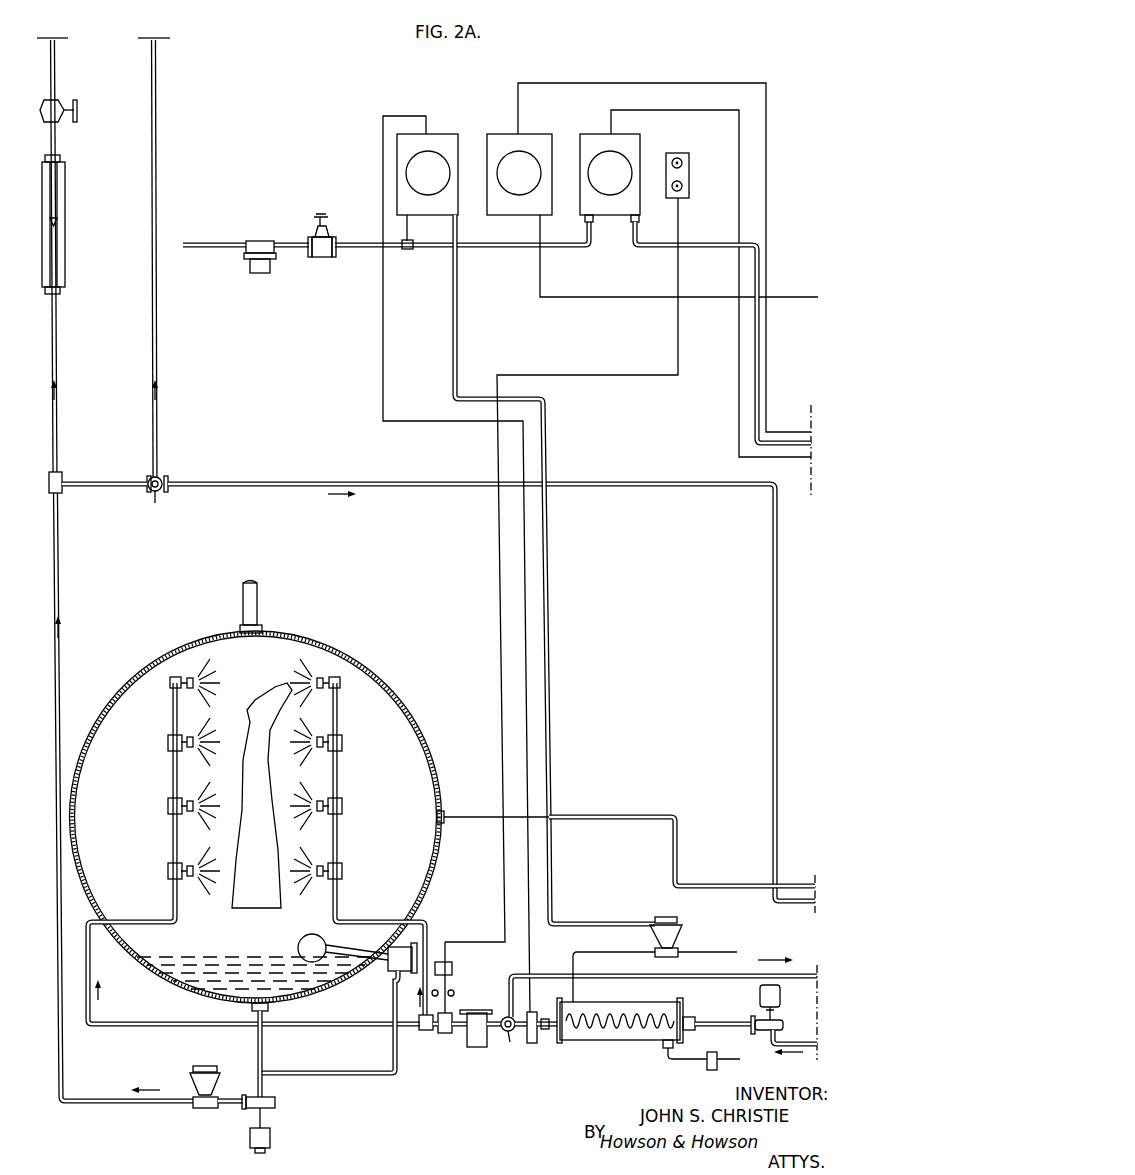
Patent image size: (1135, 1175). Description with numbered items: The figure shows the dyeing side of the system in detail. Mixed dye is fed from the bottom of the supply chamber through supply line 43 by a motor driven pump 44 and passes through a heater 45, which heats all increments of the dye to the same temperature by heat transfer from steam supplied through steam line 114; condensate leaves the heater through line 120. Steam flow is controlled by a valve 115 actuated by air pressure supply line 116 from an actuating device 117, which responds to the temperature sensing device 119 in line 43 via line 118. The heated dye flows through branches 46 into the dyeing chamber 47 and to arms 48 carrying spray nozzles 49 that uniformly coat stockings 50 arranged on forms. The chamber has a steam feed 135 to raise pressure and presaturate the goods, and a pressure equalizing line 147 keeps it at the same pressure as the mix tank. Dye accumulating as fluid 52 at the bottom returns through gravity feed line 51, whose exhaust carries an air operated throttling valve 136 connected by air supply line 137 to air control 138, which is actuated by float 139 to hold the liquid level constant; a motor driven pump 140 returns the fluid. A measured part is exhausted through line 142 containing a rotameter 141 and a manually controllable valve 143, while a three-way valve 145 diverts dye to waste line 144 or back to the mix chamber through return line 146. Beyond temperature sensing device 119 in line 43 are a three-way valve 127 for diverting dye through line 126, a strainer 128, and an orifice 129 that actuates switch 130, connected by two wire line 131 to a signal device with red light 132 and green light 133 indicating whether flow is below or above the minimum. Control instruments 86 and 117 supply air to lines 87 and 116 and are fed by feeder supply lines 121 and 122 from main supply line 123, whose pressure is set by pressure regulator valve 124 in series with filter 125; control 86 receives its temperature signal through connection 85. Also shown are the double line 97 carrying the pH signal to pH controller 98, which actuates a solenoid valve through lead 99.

The supply line 43 is at (792, 1042).
The motor driven pump 44 is at (782, 1020).
The heater 45 is at (630, 1045).
The branches 46 is at (130, 1022).
The dyeing chamber 47 is at (332, 648).
The arms 48 is at (172, 778).
The spray nozzles 49 is at (193, 692).
The stockings 50 is at (266, 814).
The gravity feed line 51 is at (256, 1038).
The fluid 52 is at (244, 955).
The connection 85 is at (735, 366).
The air supply control 86 is at (594, 133).
The air line 87 is at (702, 243).
The double line 97 is at (770, 354).
The pH controller 98 is at (492, 133).
The lead 99 is at (622, 297).
The steam line 114 is at (702, 952).
The valve 115 is at (680, 928).
The air pressure supply line 116 is at (576, 904).
The actuating device 117 is at (442, 133).
The line 118 is at (383, 318).
The temperature sensing device 119 is at (532, 1044).
The condensate line 120 is at (694, 1060).
The feeder supply line 121 is at (592, 244).
The feeder supply line 122 is at (410, 244).
The main supply line 123 is at (350, 243).
The pressure regulator valve 124 is at (322, 258).
The filter 125 is at (266, 276).
The line 126 is at (668, 978).
The three-way valve 127 is at (505, 1035).
The strainer 128 is at (477, 1010).
The orifice or Venturi device 129 is at (442, 1036).
The switch 130 is at (452, 966).
The two wire line 131 is at (502, 753).
The red light 132 is at (683, 186).
The green light 133 is at (683, 164).
The steam feed 135 is at (243, 604).
The air operated throttling valve 136 is at (192, 1076).
The air supply line 137 is at (346, 1071).
The air control 138 is at (393, 972).
The float 139 is at (310, 935).
The motor driven pump 140 is at (278, 1103).
The rotameter 141 is at (66, 232).
The line 142 is at (55, 354).
The manually controllable valve 143 is at (60, 100).
The waste line 144 is at (158, 190).
The three-way valve 145 is at (162, 481).
The return line 146 is at (435, 484).
The pressure equalizing line 147 is at (635, 815).